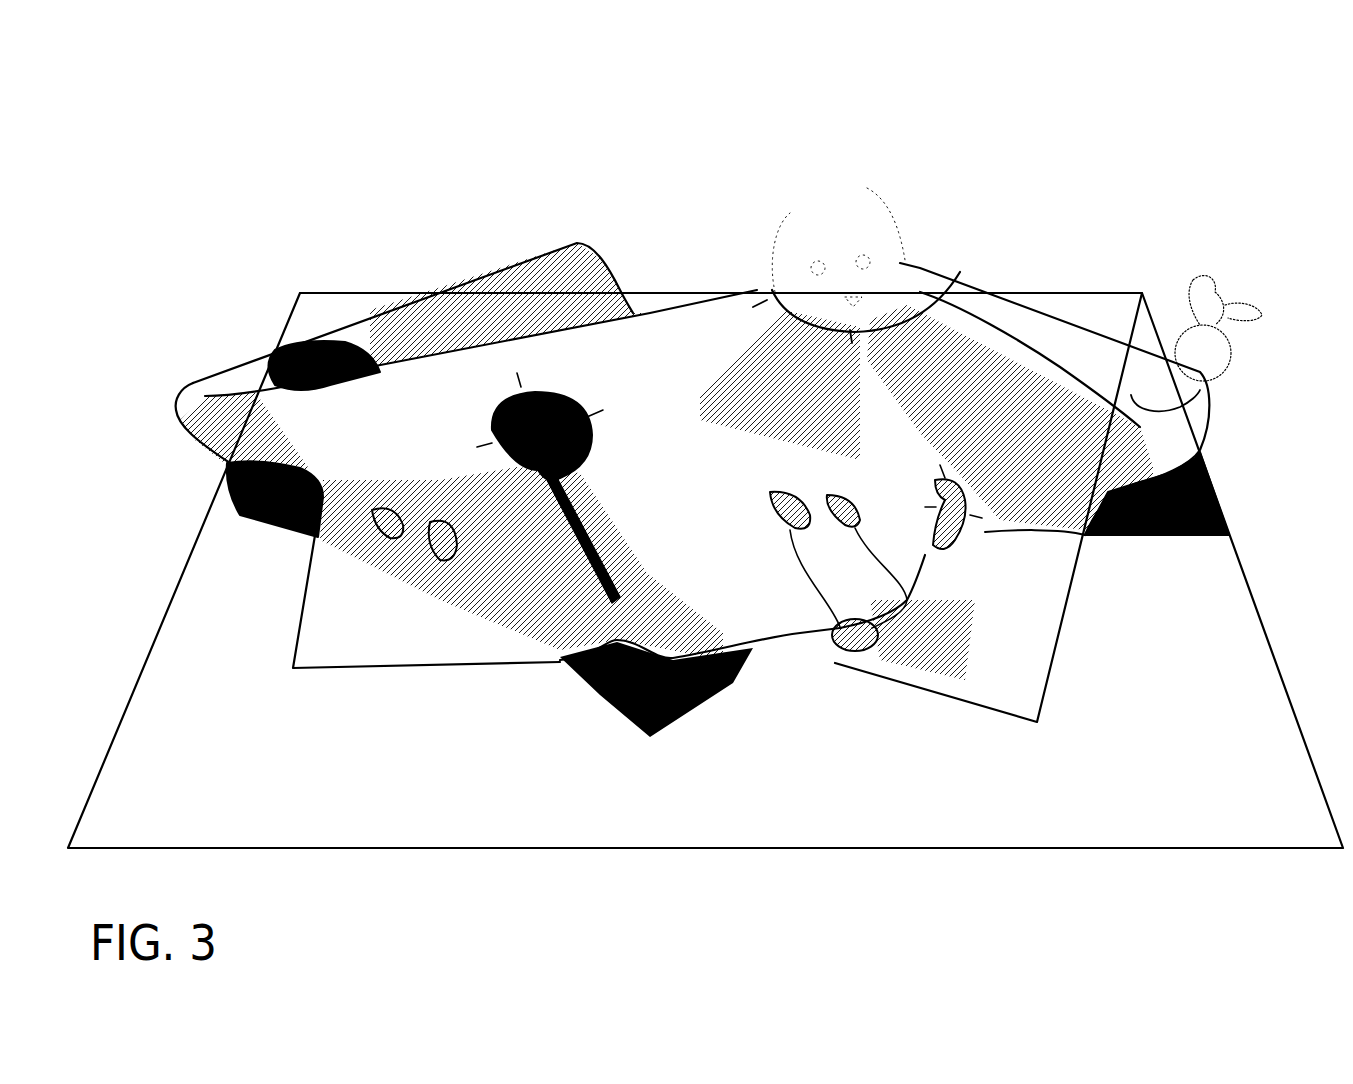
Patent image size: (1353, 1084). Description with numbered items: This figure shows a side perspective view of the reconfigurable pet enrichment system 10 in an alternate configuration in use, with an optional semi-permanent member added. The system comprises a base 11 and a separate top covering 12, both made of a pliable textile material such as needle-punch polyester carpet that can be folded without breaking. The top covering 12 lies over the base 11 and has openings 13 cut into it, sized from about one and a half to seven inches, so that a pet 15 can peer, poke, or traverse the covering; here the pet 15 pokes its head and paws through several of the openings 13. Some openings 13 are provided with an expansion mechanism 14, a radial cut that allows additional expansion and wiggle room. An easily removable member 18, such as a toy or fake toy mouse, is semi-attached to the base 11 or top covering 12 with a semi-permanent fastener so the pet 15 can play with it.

The reconfigurable pet enrichment system 10 is at (186, 310).
The base 11 is at (1120, 320).
The top covering 12 is at (403, 318).
The openings 13 is at (932, 311).
The expansion mechanism 14 is at (373, 343).
The pet 15 is at (777, 205).
The semi-attached removable member 18 is at (1250, 320).